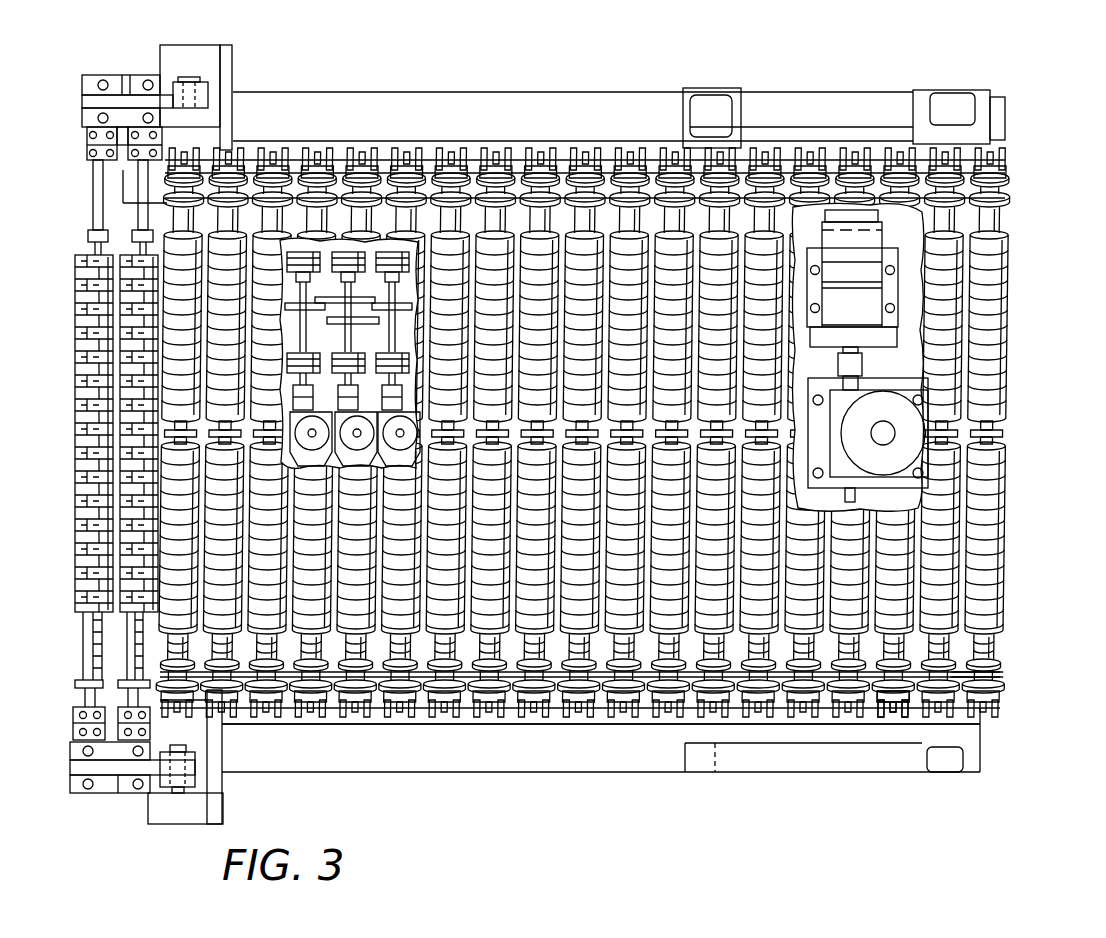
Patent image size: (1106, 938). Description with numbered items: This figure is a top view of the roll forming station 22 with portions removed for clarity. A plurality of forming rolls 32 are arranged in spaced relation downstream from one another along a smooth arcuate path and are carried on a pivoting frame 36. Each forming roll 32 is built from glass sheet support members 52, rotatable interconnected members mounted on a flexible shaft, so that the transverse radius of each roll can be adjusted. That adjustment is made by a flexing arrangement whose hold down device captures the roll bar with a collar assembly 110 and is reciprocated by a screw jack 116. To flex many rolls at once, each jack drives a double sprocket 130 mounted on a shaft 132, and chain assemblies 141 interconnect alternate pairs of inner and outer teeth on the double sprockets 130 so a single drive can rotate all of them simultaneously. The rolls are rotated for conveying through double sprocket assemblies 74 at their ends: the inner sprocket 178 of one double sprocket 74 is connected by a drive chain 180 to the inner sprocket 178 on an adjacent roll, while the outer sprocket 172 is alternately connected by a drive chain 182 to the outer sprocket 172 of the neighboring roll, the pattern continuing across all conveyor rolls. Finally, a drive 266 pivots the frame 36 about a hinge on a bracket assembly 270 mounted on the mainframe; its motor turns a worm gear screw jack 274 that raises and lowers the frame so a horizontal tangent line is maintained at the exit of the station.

The roll forming station 22 is at (694, 50).
The forming roll 32 is at (1010, 277).
The pivoting frame 36 is at (476, 92).
The glass sheet support member 52 is at (1008, 418).
The double sprocket assembly 74 is at (1011, 677).
The collar assembly 110 is at (1004, 433).
The screw jack 116 is at (392, 410).
The double sprocket 130 is at (330, 306).
The shaft 132 is at (368, 322).
The chain assembly 141 is at (345, 330).
The outer sprocket 172 is at (1011, 688).
The inner sprocket 178 is at (1012, 665).
The drive chain 180 is at (925, 673).
The drive chain 182 is at (782, 693).
The drive 266 is at (880, 240).
The bracket assembly 270 is at (187, 76).
The screw jack 274 is at (928, 408).